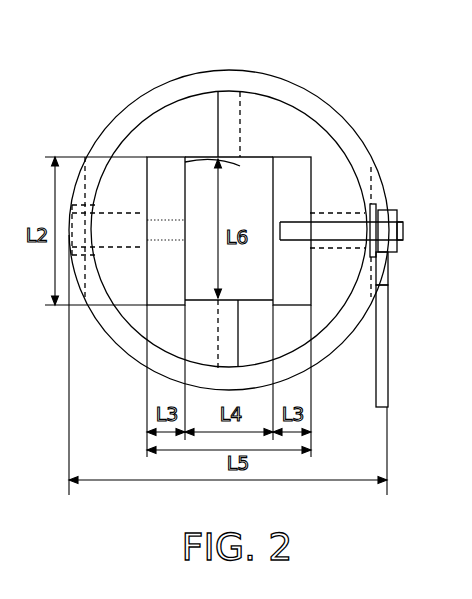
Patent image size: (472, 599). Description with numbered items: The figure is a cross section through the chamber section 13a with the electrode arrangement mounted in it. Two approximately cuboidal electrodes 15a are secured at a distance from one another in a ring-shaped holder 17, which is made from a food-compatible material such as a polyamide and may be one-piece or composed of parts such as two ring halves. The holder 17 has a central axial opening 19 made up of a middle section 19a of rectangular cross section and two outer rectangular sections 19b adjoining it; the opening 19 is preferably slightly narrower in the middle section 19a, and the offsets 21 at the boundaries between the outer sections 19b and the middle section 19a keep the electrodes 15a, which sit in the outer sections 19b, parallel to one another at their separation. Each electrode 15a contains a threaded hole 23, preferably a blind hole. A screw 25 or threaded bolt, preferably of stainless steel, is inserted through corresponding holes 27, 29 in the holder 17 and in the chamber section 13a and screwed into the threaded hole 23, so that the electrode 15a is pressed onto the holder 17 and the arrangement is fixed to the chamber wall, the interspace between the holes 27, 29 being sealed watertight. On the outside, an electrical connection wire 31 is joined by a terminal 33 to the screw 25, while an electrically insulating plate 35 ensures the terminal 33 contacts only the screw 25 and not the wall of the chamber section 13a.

The chamber section 13a is at (337, 112).
The electrode 15a is at (167, 157).
The ring-shaped holder 17 is at (232, 70).
The central axial opening 19 is at (175, 311).
The middle section 19a is at (260, 287).
The outer rectangular section 19b is at (147, 305).
The offset 21 is at (232, 160).
The threaded hole 23 is at (166, 220).
The screw 25 is at (355, 210).
The hole in the holder 27 is at (363, 208).
The hole in the chamber section 29 is at (372, 203).
The electrical connection wire 31 is at (387, 352).
The terminal 33 is at (387, 254).
The electrically insulating plate 35 is at (384, 230).